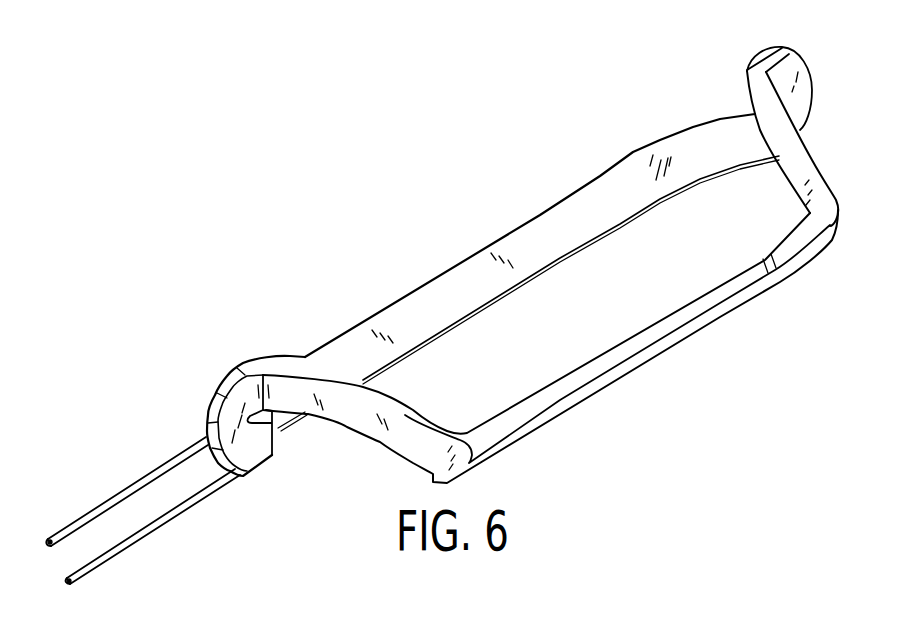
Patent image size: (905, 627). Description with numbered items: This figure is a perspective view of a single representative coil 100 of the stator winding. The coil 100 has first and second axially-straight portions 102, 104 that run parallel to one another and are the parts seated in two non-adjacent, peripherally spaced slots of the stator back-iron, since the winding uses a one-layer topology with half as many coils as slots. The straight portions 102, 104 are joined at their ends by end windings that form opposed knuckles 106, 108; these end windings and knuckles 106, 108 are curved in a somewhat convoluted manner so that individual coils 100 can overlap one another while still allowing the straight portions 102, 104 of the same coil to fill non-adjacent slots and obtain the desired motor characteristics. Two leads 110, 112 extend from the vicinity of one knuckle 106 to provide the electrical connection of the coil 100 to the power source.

The coil 100 is at (531, 275).
The first axially-straight portion 102 is at (410, 317).
The second axially-straight portion 104 is at (540, 416).
The knuckle 106 is at (258, 454).
The knuckle 108 is at (804, 96).
The lead 110 is at (46, 543).
The lead 112 is at (62, 583).